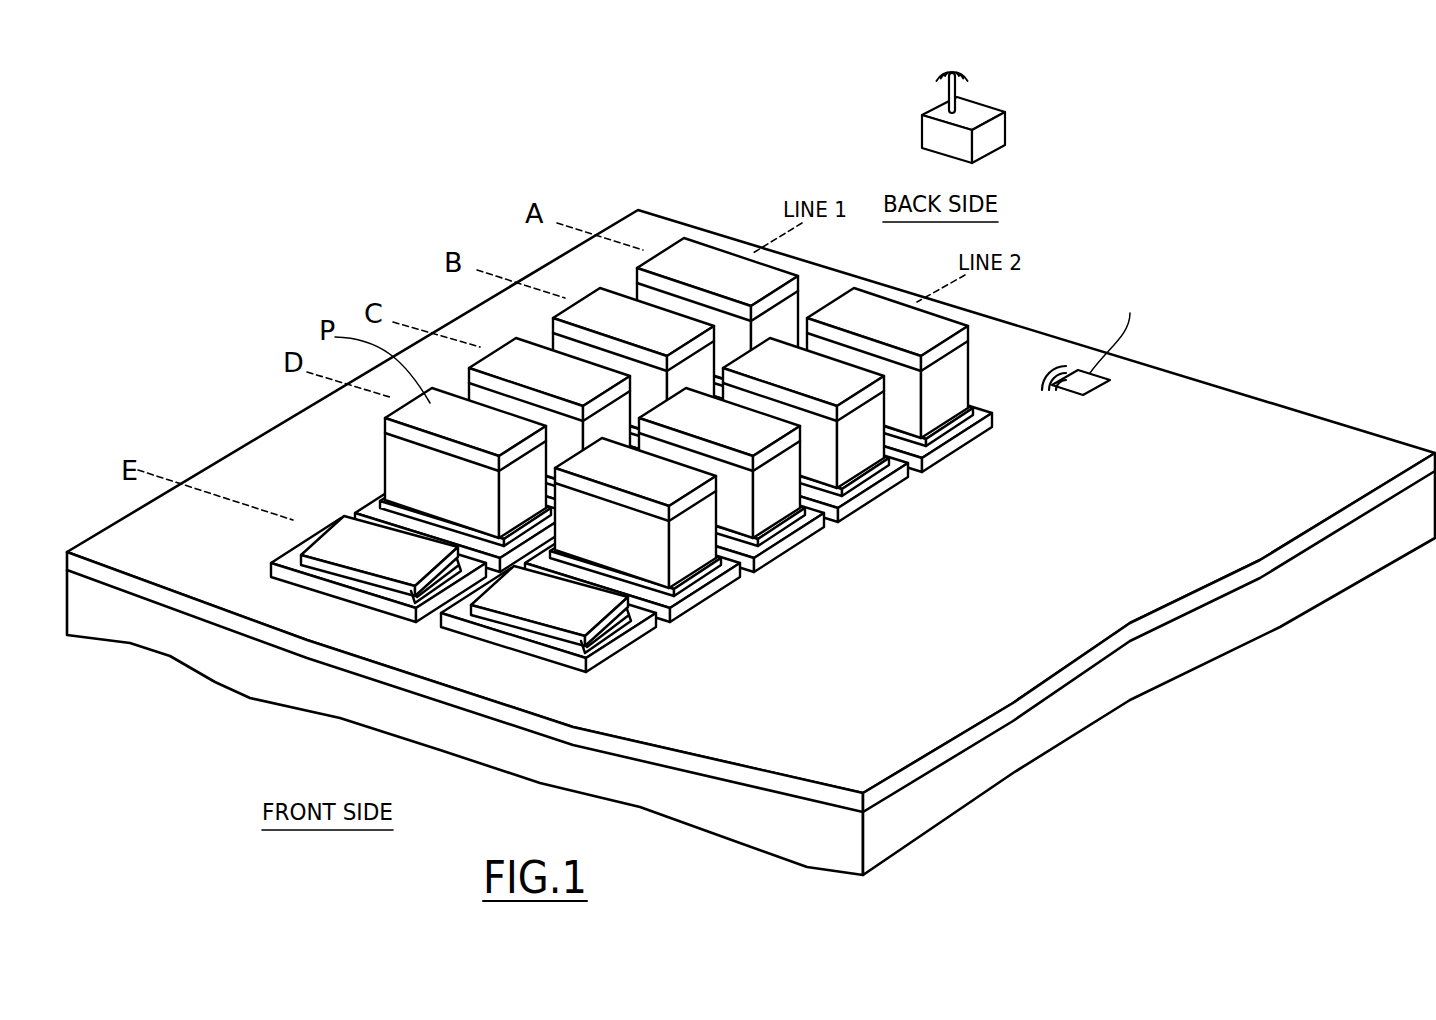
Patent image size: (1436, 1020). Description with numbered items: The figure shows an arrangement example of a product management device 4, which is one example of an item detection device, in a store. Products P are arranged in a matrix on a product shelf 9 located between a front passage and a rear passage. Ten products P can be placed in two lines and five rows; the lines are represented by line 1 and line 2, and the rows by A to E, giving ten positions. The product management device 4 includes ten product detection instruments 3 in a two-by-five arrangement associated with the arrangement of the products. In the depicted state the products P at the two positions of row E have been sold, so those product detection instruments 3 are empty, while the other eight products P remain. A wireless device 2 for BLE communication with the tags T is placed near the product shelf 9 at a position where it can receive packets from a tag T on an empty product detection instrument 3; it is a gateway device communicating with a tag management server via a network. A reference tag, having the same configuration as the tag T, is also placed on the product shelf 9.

The line 1 is at (751, 473).
The wireless device 2 is at (1000, 130).
The product detection instrument 3 is at (383, 493).
The product management device 4 is at (601, 464).
The product shelf 9 is at (1190, 413).